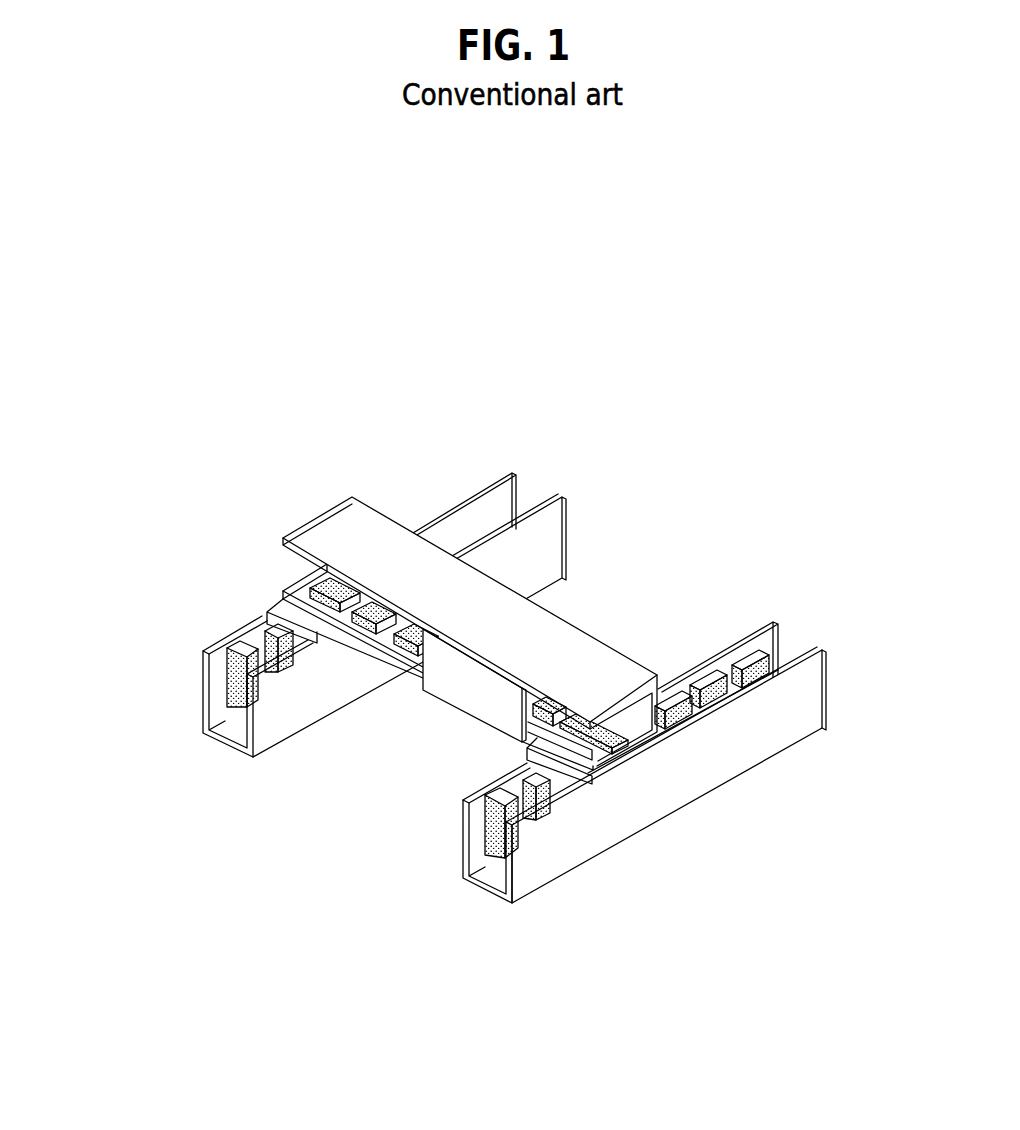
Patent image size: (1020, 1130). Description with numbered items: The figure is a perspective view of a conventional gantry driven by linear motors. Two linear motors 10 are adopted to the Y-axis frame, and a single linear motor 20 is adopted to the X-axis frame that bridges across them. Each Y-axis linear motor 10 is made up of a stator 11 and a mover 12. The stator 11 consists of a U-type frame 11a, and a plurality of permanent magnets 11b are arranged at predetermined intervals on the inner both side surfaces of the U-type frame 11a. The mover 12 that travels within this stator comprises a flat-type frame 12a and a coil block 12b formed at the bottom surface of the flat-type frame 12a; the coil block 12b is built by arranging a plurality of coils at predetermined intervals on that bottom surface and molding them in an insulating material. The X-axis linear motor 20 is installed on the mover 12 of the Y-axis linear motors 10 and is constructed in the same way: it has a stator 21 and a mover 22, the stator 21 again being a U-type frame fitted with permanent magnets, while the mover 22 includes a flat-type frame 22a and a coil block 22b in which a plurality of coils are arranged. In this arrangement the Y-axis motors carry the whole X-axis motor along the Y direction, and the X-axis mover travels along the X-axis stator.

The semiconductor module housing 10 is at (460, 704).
The housing body 11 is at (491, 704).
The housing side wall 11a is at (270, 735).
The housing side wall 11b is at (493, 500).
The circuit board 12 is at (460, 694).
The board connecting portion 12a is at (280, 603).
The semiconductor chip 12b is at (330, 580).
The connector 20 is at (495, 636).
The connector cover plate 21 is at (620, 650).
The connector base plate 22 is at (463, 702).
The connector front wall 22a is at (465, 714).
The connector contact 22b is at (537, 680).